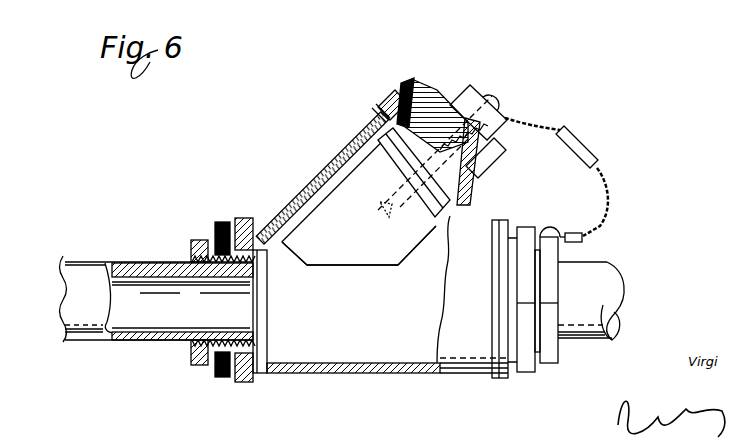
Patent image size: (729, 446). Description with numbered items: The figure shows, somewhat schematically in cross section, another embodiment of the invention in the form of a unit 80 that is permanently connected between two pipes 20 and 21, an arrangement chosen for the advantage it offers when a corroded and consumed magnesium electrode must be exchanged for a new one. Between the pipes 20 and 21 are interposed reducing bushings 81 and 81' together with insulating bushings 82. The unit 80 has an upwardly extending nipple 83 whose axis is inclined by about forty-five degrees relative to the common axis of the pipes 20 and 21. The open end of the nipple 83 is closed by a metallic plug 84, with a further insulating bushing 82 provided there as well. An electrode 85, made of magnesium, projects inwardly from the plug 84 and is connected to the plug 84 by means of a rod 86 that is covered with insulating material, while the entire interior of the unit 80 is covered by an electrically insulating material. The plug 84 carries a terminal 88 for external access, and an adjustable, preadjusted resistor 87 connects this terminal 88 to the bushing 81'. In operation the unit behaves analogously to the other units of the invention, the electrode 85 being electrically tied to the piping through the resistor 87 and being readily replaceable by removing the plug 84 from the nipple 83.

The pipe 20 is at (130, 263).
The pipe 21 is at (590, 262).
The unit 80 is at (370, 392).
The reducing bushing 81 is at (182, 316).
The reducing bushing 81' is at (575, 299).
The insulating bushing 82 is at (408, 80).
The nipple 83 is at (333, 160).
The metallic plug 84 is at (437, 97).
The electrode 85 is at (359, 250).
The rod 86 is at (427, 163).
The adjustable preadjusted resistor 87 is at (578, 138).
The terminal 88 is at (470, 90).